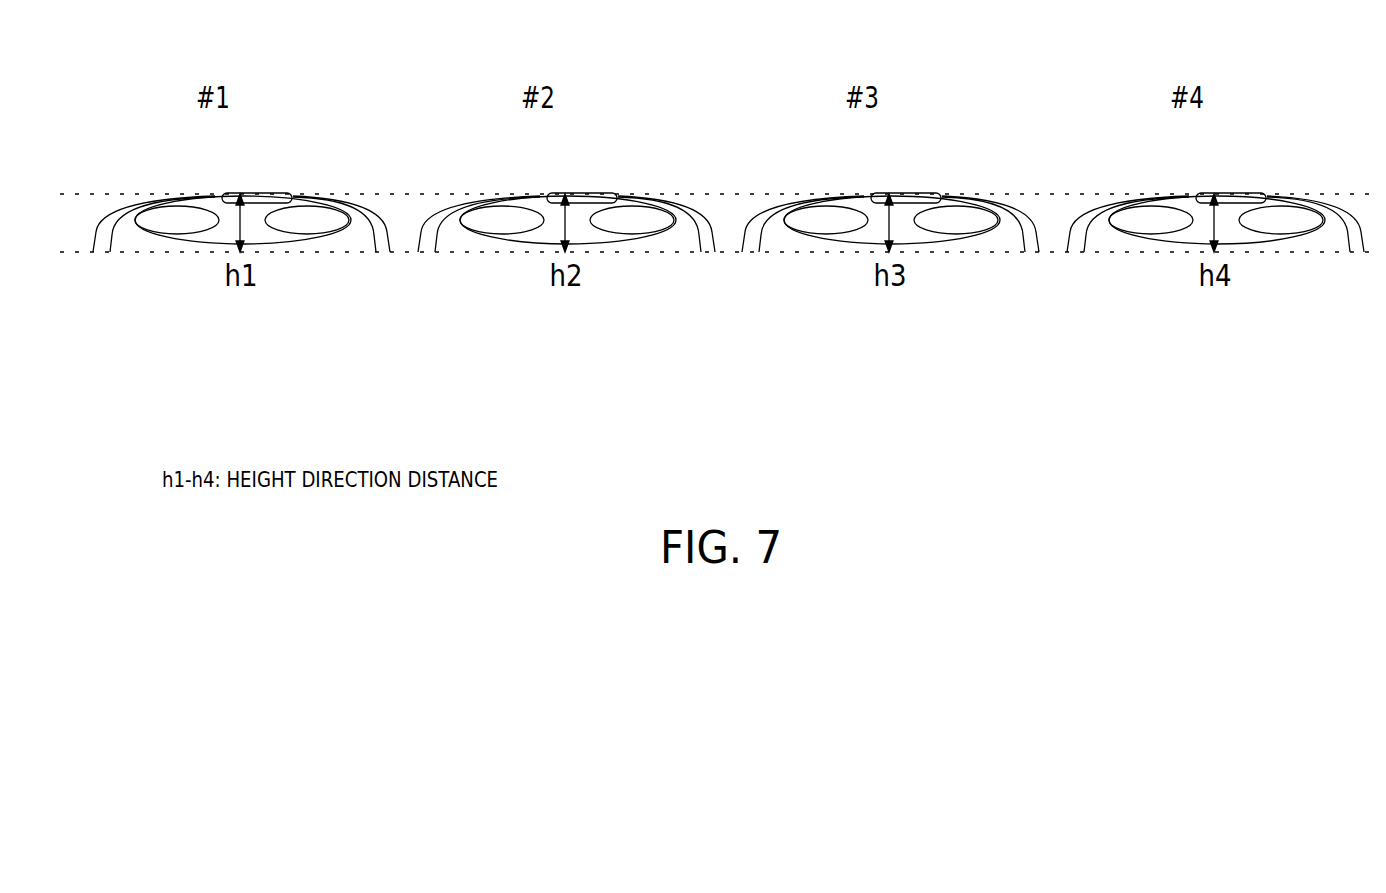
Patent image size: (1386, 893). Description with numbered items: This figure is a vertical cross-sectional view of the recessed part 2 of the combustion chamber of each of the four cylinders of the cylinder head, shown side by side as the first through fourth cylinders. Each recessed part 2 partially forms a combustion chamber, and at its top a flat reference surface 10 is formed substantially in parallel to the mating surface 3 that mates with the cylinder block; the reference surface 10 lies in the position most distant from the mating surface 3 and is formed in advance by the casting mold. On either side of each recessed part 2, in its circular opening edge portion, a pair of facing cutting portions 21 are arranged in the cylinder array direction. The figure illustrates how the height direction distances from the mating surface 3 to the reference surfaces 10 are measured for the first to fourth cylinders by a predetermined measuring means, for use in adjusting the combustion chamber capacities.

The recessed part 2 is at (155, 258).
The cutting portion 21 is at (105, 243).
The reference surface 10 is at (265, 199).
The mating surface 3 is at (75, 253).